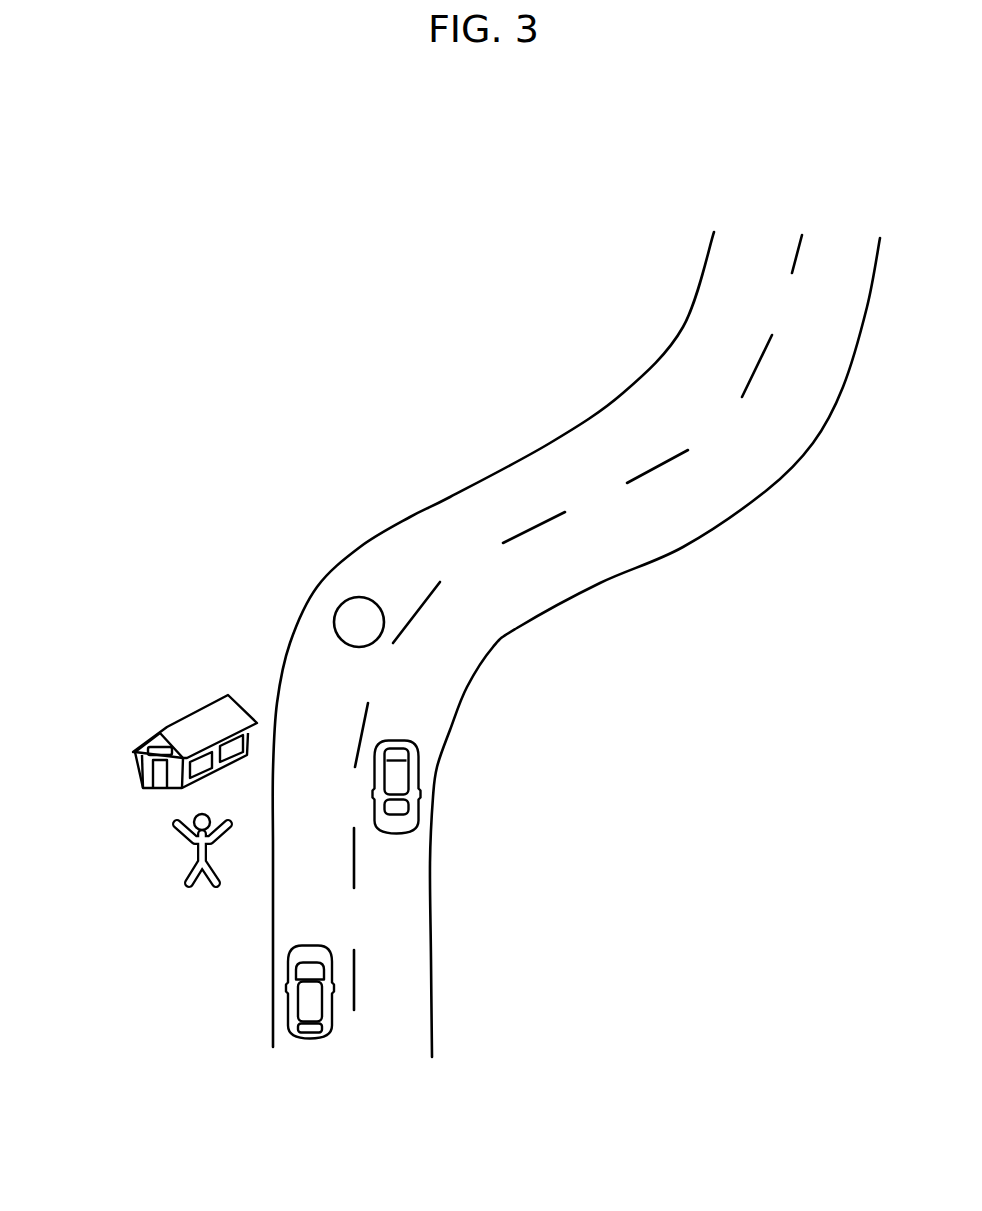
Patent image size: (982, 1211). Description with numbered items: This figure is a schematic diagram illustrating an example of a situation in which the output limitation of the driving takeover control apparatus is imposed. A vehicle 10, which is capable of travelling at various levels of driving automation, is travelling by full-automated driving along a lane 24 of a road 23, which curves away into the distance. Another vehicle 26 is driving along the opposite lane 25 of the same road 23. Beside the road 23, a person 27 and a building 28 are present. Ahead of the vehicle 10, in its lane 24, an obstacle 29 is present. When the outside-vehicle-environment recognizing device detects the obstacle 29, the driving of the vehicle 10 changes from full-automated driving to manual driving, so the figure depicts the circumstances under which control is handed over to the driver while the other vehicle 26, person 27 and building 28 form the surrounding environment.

The vehicle 10 is at (290, 1000).
The road 23 is at (805, 135).
The lane 24 is at (752, 262).
The opposite lane 25 is at (843, 262).
The another vehicle 26 is at (417, 778).
The person 27 is at (192, 862).
The building 28 is at (142, 770).
The obstacle 29 is at (343, 600).